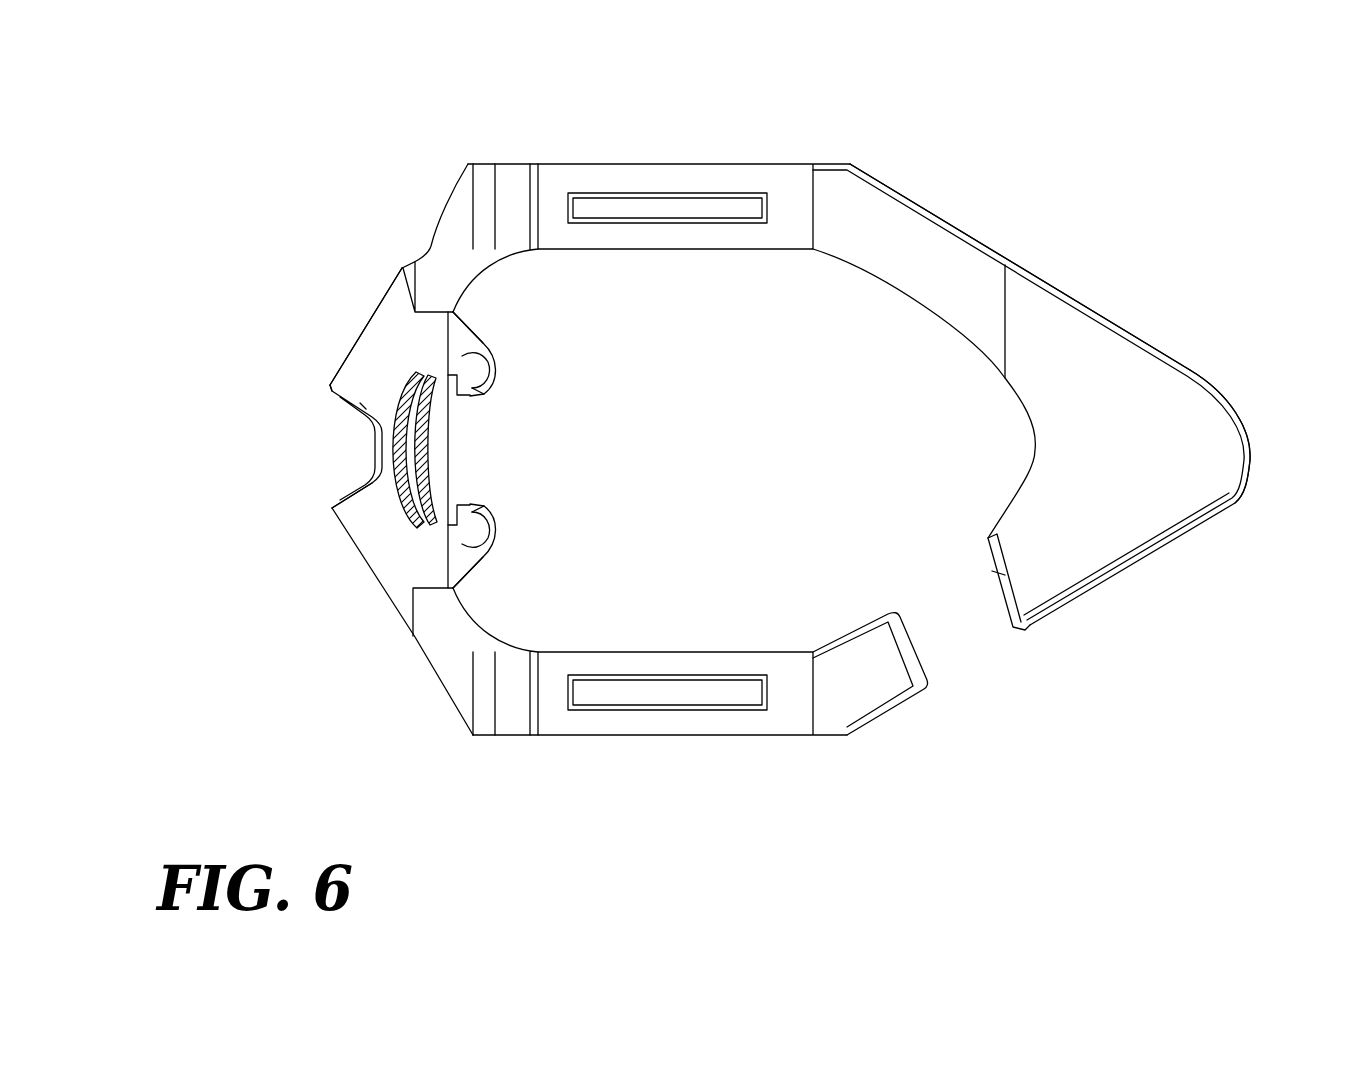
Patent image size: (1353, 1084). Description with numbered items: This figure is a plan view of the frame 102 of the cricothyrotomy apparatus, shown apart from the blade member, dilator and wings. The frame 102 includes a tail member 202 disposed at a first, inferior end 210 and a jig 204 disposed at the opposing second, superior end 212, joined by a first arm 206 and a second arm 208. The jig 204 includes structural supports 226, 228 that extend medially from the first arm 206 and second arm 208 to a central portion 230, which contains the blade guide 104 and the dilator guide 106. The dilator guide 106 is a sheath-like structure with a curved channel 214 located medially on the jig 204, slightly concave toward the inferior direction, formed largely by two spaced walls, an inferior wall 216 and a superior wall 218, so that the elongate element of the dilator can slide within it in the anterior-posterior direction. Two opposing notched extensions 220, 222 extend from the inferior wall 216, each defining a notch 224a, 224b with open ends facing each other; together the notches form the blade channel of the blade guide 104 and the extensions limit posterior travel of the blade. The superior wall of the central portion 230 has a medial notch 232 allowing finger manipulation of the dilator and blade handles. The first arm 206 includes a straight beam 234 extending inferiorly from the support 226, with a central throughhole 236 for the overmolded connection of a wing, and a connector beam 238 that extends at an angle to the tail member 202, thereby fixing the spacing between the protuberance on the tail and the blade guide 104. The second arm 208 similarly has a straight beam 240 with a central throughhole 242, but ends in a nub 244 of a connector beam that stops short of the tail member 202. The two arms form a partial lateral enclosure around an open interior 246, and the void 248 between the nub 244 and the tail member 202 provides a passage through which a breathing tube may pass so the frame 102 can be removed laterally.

The frame 102 is at (1207, 181).
The blade guide 104 is at (463, 392).
The dilator guide 106 is at (397, 507).
The tail member 202 is at (1188, 387).
The jig 204 is at (390, 315).
The first arm 206 is at (793, 187).
The second arm 208 is at (798, 738).
The first end 210 is at (1247, 528).
The second end 212 is at (188, 422).
The curved channel 214 is at (403, 450).
The inferior wall 216 is at (443, 477).
The superior wall 218 is at (415, 525).
The notched extension 220 is at (487, 350).
The notched extension 222 is at (477, 553).
The notch 224a is at (462, 332).
The notch 224b is at (433, 527).
The structural support 226 is at (445, 205).
The structural support 228 is at (453, 713).
The central portion 230 is at (320, 367).
The medial notch 232 is at (347, 408).
The straight beam 234 is at (683, 178).
The central throughhole 236 is at (652, 208).
The connector beam 238 is at (957, 263).
The straight beam 240 is at (685, 650).
The central throughhole 242 is at (672, 693).
The nub 244 is at (900, 710).
The open interior 246 is at (790, 484).
The void 248 is at (970, 652).